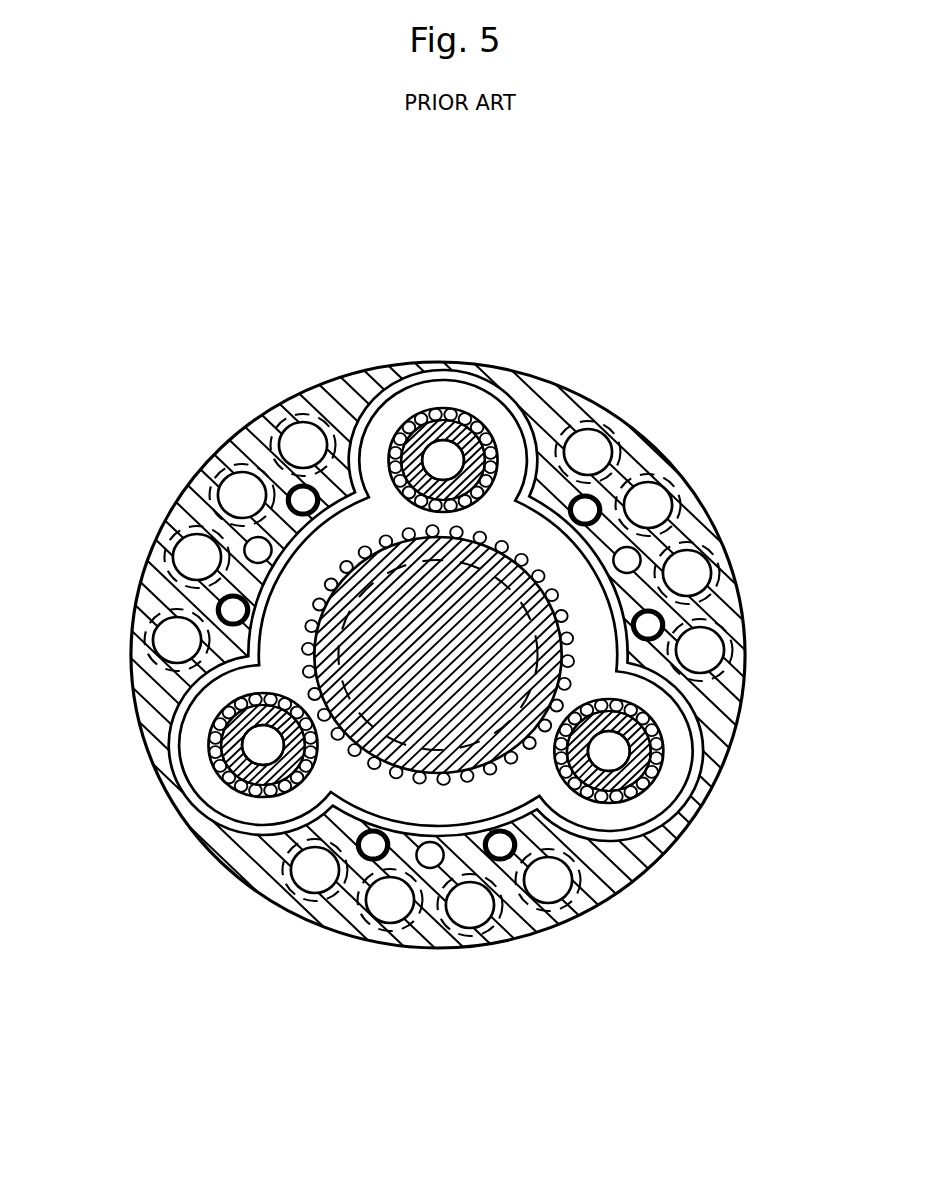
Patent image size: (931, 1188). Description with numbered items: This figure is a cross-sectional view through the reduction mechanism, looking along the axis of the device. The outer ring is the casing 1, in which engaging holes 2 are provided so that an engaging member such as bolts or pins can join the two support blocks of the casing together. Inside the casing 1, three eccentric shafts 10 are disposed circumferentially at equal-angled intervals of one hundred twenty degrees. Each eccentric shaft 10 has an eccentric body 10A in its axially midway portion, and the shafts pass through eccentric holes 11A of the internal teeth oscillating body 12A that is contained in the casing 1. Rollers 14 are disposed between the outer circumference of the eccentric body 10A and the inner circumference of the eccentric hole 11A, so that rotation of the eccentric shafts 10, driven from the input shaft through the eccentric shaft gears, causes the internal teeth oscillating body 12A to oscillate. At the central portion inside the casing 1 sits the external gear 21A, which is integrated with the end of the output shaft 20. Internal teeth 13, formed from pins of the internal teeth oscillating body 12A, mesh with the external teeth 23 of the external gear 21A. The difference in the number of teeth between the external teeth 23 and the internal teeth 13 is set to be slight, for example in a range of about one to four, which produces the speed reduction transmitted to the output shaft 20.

The casing 1 is at (325, 925).
The engaging holes 2 is at (467, 907).
The eccentric shafts 10 is at (436, 462).
The eccentric body 10A is at (463, 425).
The eccentric holes 11A is at (393, 443).
The internal teeth oscillating body 12A is at (510, 467).
The internal teeth 13 is at (390, 540).
The rollers 14 is at (418, 425).
The output shaft 20 is at (575, 607).
The external gear 21A is at (310, 674).
The external teeth 23 is at (479, 534).